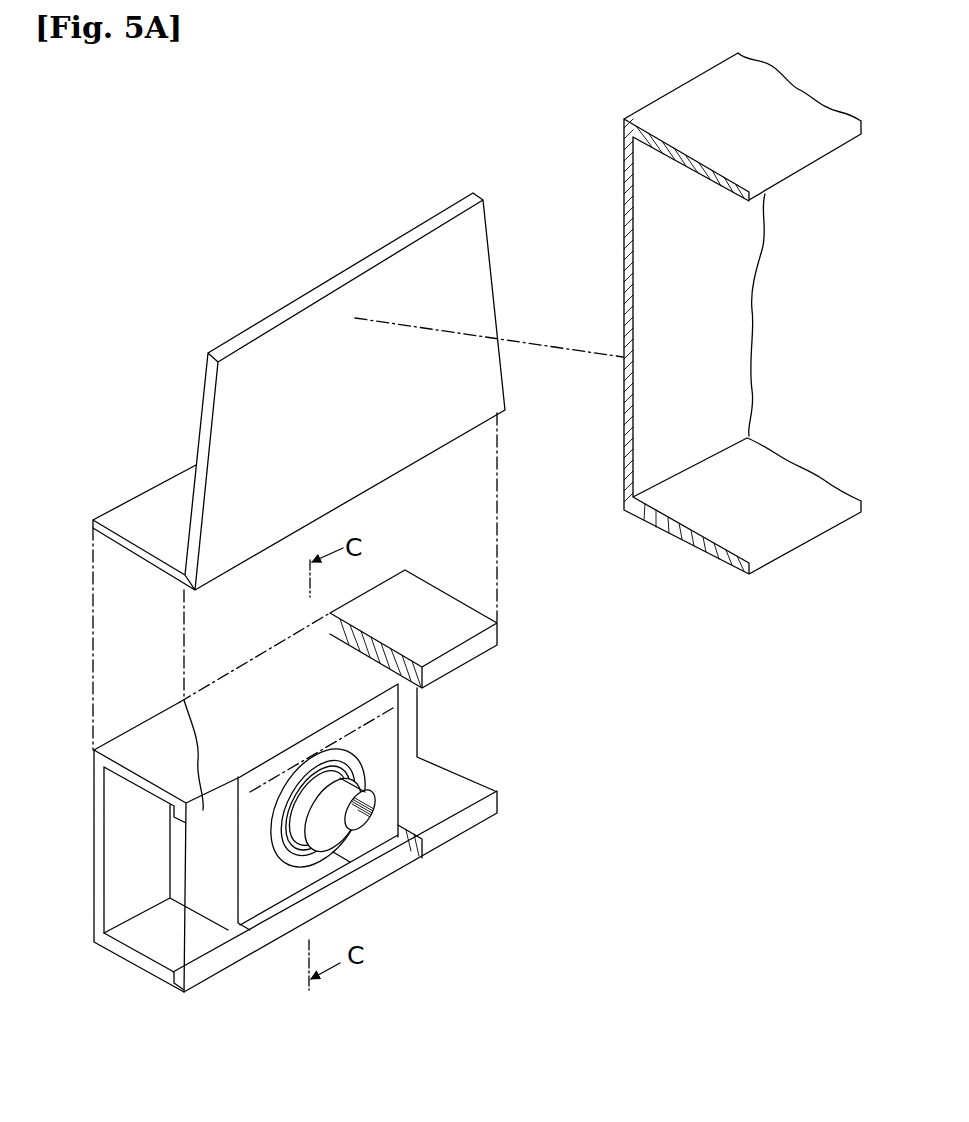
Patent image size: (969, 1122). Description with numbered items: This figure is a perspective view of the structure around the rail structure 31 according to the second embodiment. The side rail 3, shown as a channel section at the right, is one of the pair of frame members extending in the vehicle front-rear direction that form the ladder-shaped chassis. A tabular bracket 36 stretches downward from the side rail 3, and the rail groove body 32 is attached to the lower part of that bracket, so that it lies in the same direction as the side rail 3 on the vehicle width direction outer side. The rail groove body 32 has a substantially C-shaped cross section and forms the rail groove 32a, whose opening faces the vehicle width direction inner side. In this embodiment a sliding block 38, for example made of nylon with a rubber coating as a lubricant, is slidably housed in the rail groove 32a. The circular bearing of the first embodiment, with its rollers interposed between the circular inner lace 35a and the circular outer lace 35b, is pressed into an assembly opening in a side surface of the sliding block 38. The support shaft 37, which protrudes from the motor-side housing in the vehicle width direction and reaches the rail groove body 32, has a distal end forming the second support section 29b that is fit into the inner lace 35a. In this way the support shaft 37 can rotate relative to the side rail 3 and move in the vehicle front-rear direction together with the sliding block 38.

The side rail 3 is at (624, 170).
The tabular bracket 36 is at (203, 397).
The sliding block 38 is at (270, 693).
The inner lace 35a is at (337, 757).
The outer lace 35b is at (293, 782).
The rail groove 32a is at (423, 650).
The support shaft 37 is at (330, 856).
The second support section 29b is at (300, 946).
The rail groove body 32 is at (122, 957).
The rail structure 31 is at (165, 985).